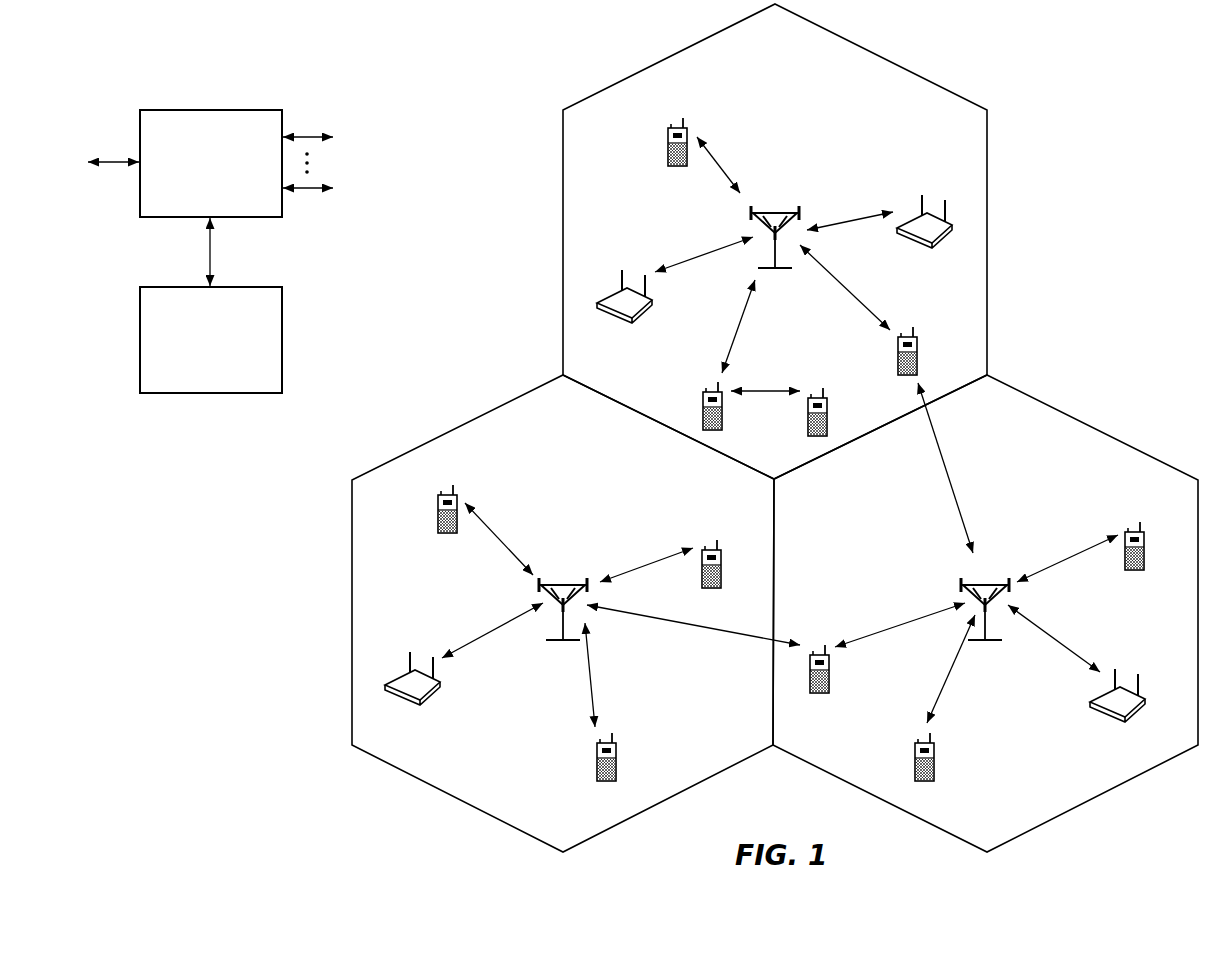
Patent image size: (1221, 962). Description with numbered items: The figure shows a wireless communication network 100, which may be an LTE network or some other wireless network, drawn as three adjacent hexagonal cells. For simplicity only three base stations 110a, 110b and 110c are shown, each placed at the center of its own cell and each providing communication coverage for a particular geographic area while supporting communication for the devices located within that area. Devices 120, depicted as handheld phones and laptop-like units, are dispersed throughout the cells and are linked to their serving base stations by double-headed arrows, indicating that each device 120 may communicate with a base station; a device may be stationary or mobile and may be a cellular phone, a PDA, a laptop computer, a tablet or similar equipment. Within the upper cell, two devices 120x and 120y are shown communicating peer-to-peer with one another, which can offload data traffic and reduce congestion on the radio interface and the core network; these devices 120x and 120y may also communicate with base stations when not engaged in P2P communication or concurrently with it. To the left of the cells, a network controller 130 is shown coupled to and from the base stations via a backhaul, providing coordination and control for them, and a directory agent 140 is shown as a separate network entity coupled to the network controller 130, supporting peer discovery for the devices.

The wireless communication network 100 is at (1137, 68).
The base station 110a is at (768, 210).
The base station 110b is at (556, 582).
The base station 110c is at (978, 582).
The device 120 is at (668, 140).
The device 120x is at (702, 405).
The device 120y is at (828, 410).
The network controller 130 is at (204, 109).
The directory agent 140 is at (240, 285).